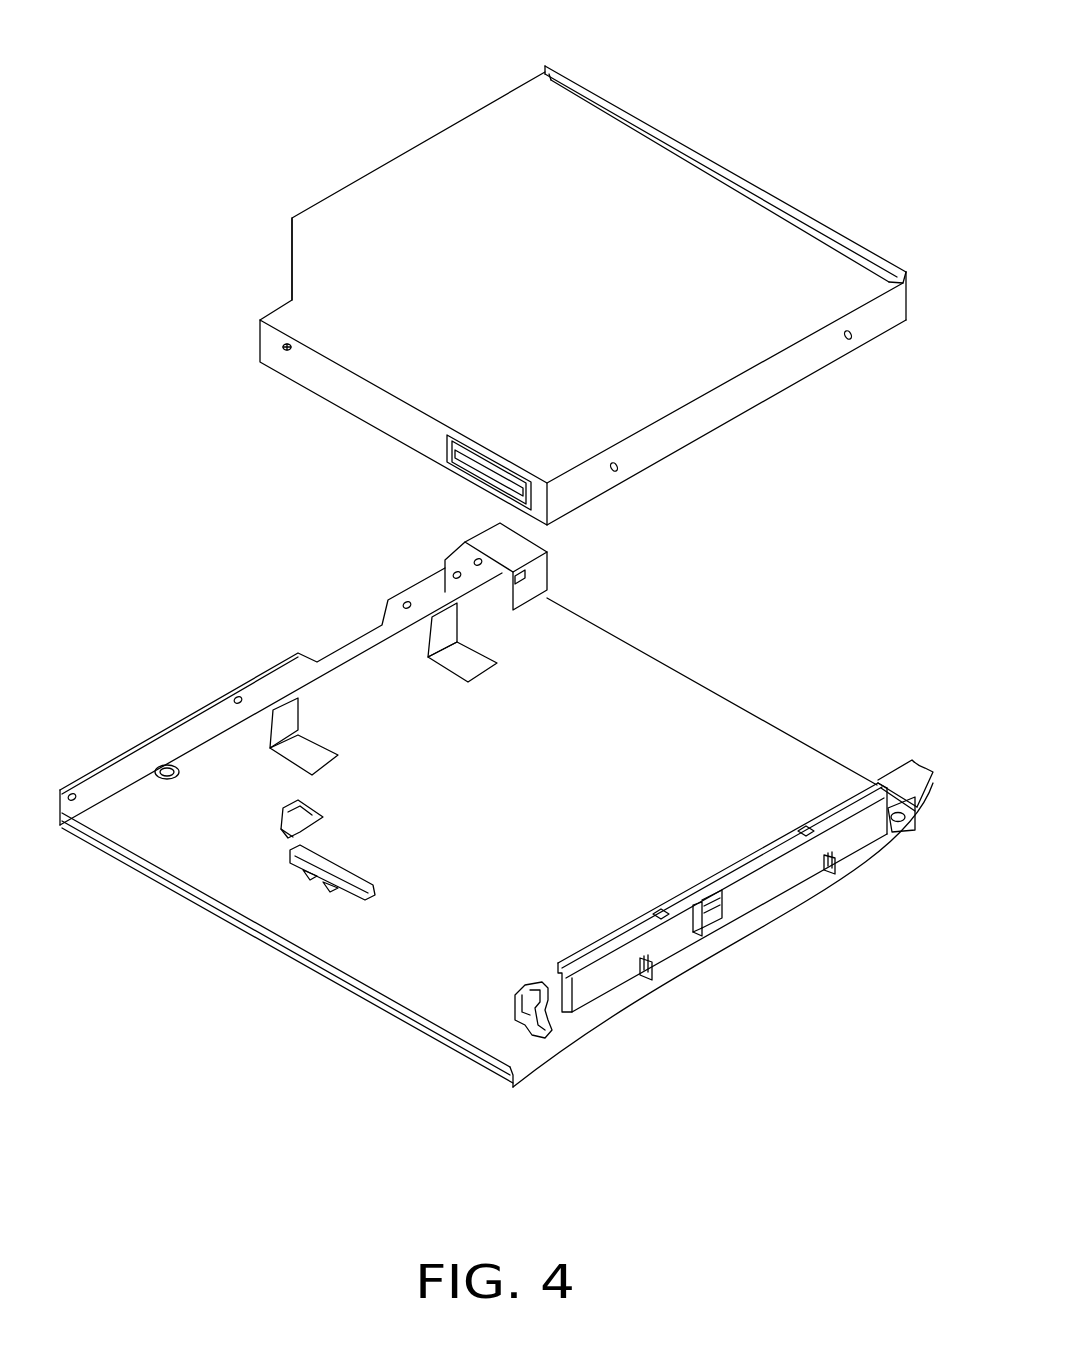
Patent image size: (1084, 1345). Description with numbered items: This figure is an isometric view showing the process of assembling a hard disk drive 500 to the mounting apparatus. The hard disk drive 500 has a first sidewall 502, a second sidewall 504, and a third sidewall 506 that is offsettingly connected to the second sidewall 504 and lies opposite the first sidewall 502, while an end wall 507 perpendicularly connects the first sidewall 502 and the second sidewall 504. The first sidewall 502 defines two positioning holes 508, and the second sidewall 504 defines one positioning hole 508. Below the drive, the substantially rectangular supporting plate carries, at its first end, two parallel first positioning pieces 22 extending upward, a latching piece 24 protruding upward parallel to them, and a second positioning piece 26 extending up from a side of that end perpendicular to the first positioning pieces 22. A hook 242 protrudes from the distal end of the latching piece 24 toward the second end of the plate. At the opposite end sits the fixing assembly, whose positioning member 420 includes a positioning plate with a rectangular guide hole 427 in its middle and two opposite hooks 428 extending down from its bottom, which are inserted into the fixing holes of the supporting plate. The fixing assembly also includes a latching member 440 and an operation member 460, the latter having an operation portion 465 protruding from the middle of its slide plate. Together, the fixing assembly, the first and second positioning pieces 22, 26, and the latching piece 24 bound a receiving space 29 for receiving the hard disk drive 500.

The hard disk drive 500 is at (403, 202).
The first sidewall 502 is at (712, 413).
The second sidewall 504 is at (283, 318).
The third sidewall 506 is at (438, 130).
The end wall 507 is at (360, 400).
The positioning hole 508 is at (283, 347).
The first positioning piece 22 is at (447, 627).
The latching piece 24 is at (285, 815).
The hook 242 is at (303, 808).
The second positioning piece 26 is at (317, 878).
The receiving space 29 is at (640, 790).
The positioning member 420 is at (602, 982).
The guide hole 427 is at (720, 918).
The hook 428 is at (648, 977).
The latching member 440 is at (843, 797).
The operation member 460 is at (520, 1008).
The operation portion 465 is at (700, 932).